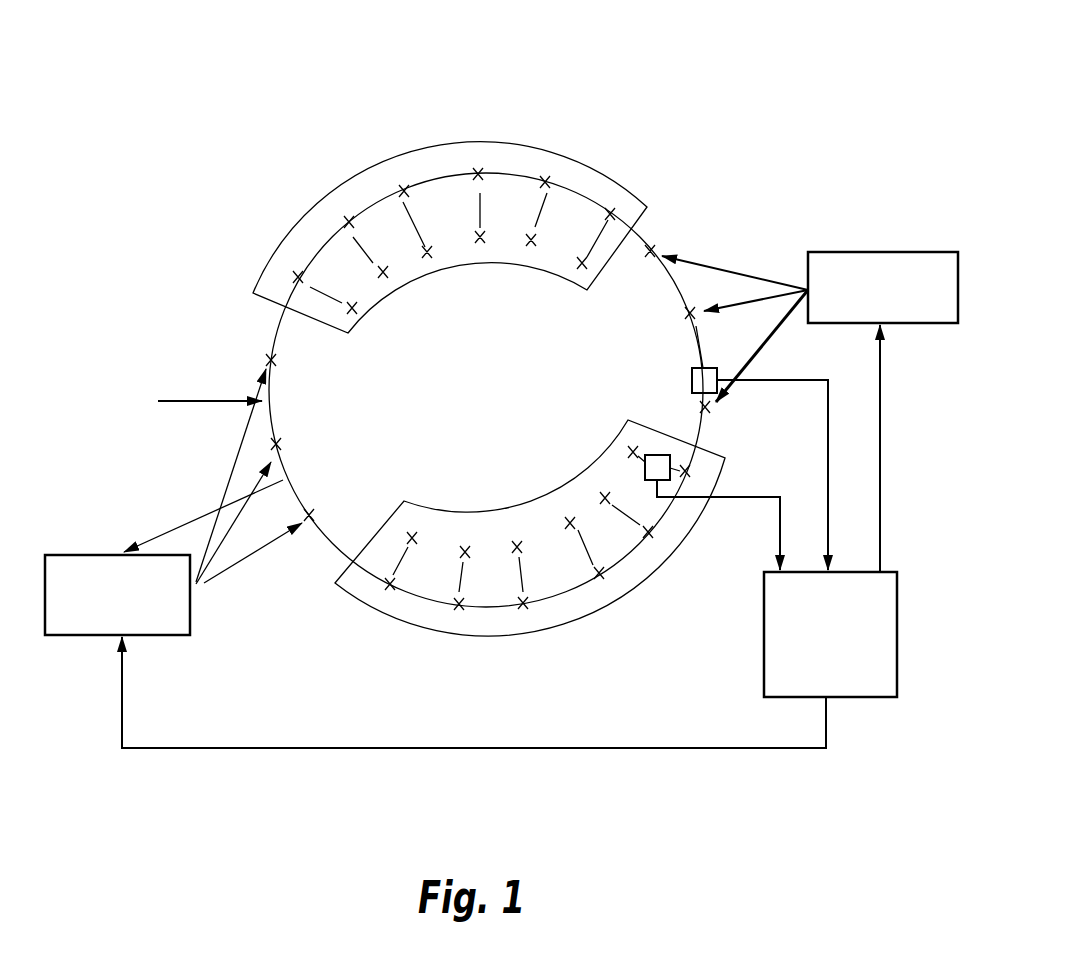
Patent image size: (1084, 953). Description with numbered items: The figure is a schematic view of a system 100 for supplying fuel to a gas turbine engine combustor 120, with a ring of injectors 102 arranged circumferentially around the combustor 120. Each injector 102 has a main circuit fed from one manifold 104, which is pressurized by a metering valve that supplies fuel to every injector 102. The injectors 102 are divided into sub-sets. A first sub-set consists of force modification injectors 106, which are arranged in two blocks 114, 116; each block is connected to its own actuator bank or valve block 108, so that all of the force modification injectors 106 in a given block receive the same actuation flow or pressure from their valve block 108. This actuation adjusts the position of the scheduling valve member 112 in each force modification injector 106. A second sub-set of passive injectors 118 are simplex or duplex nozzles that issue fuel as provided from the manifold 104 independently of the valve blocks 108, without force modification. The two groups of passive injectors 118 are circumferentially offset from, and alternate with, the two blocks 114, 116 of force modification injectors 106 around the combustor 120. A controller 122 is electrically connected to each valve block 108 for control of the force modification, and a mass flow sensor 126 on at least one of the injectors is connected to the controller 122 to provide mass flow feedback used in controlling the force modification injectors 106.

The system 100 is at (203, 148).
The injectors 102 is at (743, 200).
The manifold 104 is at (319, 562).
The force modification injectors 106 is at (661, 233).
The valve block 108 is at (72, 636).
The scheduling valve member 112 is at (389, 629).
The block of force modification injectors 114 is at (294, 402).
The block of force modification injectors 116 is at (623, 304).
The passive injectors 118 is at (450, 139).
The gas turbine engine combustor 120 is at (496, 390).
The controller 122 is at (865, 700).
The mass flow sensor 126 is at (654, 454).